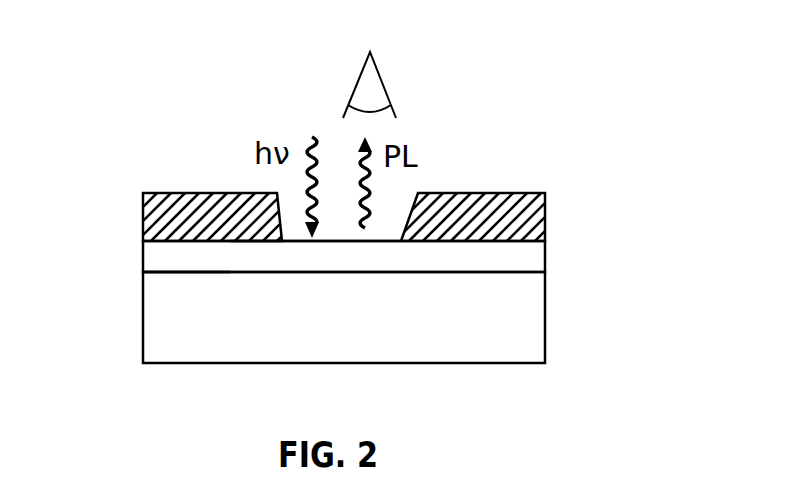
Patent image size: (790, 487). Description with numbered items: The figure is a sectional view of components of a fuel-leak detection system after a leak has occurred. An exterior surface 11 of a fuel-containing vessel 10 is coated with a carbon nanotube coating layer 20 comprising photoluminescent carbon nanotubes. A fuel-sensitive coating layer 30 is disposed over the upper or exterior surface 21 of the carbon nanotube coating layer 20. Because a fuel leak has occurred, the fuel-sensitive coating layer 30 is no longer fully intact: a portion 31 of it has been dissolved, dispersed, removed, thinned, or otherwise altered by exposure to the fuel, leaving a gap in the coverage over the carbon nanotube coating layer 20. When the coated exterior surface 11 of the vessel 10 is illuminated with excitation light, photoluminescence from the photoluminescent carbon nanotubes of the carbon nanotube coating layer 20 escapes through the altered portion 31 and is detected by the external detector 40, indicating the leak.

The fuel-containing vessel 10 is at (547, 322).
The exterior surface 11 is at (175, 270).
The carbon nanotube coating layer 20 is at (547, 257).
The exterior surface of the carbon nanotube coating layer 21 is at (230, 238).
The fuel-sensitive coating layer 30 is at (547, 217).
The portion of the fuel-sensitive coating layer 31 is at (390, 202).
The detector 40 is at (410, 93).